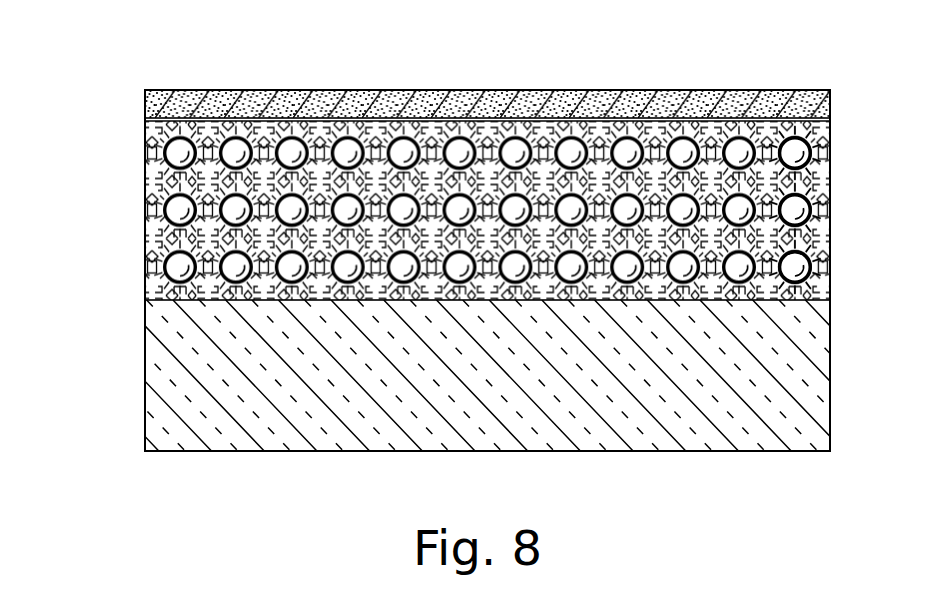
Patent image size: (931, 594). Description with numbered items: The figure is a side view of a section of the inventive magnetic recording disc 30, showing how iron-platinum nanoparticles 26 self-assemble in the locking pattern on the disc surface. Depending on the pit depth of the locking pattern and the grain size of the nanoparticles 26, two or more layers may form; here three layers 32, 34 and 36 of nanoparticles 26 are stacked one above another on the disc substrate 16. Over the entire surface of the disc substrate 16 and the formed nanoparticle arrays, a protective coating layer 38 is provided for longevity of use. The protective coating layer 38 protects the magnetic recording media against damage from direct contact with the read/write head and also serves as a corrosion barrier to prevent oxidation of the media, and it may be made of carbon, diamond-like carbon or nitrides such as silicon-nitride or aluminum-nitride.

The disc substrate 16 is at (649, 452).
The iron-platinum nanoparticles 26 is at (812, 160).
The magnetic recording disc 30 is at (259, 472).
The first layer of nanoparticles 32 is at (135, 260).
The second layer of nanoparticles 34 is at (135, 212).
The third layer of nanoparticles 36 is at (135, 152).
The protective coating layer 38 is at (228, 90).